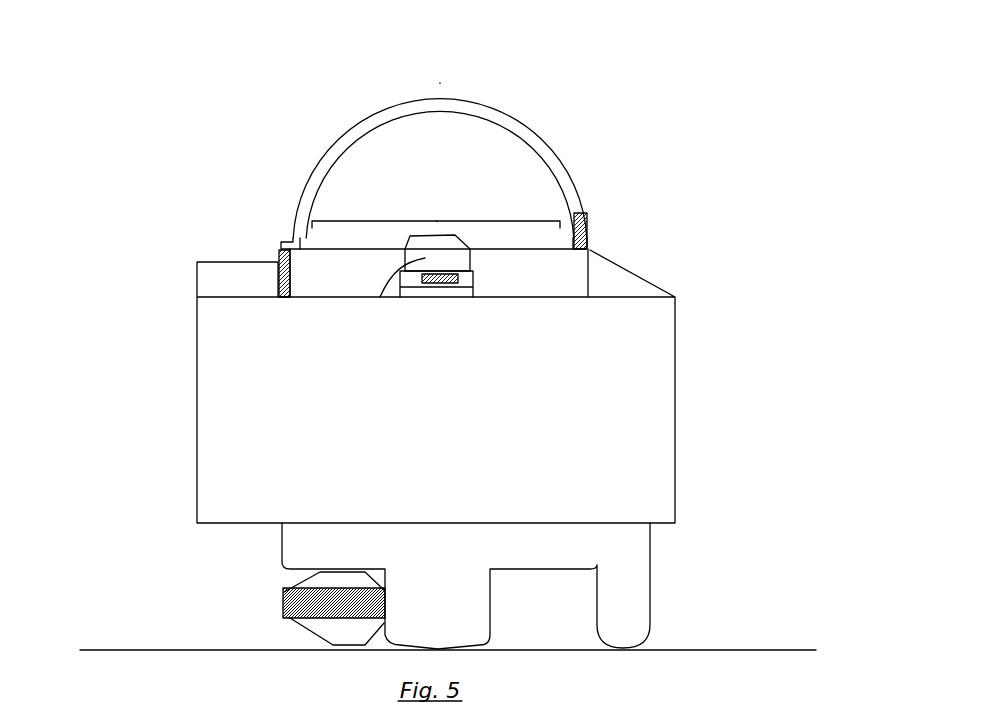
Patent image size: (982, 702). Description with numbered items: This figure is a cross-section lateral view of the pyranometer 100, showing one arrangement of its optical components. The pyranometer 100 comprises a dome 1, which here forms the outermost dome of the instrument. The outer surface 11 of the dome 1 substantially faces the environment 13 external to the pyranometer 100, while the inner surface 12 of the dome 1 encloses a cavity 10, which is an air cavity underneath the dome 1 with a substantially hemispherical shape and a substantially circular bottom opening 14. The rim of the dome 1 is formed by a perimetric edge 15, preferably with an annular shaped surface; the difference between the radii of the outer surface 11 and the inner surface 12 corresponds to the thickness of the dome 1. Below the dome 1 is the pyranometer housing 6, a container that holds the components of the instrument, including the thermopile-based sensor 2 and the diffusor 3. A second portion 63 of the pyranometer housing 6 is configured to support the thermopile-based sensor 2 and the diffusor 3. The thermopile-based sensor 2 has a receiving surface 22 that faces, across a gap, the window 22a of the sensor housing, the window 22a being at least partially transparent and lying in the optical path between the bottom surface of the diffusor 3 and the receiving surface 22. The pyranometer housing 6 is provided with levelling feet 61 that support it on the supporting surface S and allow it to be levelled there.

The pyranometer 100 is at (758, 209).
The dome 1 is at (298, 198).
The outer surface 11 is at (487, 82).
The inner surface 12 is at (464, 109).
The environment 13 is at (297, 71).
The cavity 10 is at (352, 195).
The bottom opening 14 is at (508, 199).
The edge 15 is at (580, 226).
The second portion 63 is at (320, 270).
The pyranometer housing 6 is at (220, 347).
The levelling feet 61 is at (281, 603).
The receiving surface 22 is at (451, 262).
The window 22a is at (435, 272).
The thermopile-based sensor 2 is at (469, 289).
The diffusor 3 is at (385, 298).
The supporting surface S is at (718, 643).